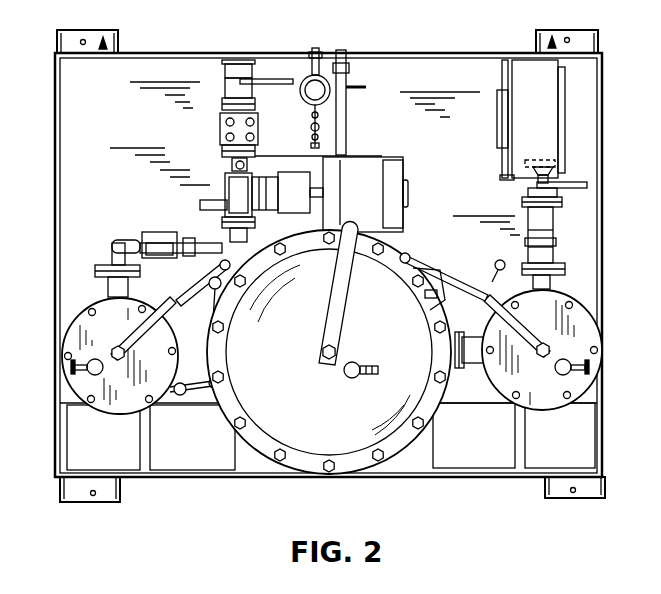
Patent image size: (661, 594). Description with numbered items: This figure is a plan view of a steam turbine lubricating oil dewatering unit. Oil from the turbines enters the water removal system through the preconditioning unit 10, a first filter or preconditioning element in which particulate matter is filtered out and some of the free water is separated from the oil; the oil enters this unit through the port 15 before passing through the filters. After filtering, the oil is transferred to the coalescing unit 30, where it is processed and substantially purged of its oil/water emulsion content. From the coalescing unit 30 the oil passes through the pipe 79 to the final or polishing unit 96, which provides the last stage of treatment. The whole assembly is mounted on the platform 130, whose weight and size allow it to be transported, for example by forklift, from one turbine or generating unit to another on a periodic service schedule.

The preconditioning unit 10 is at (64, 348).
The port 15 is at (125, 240).
The coalescing unit 30 is at (306, 445).
The pipe 79 is at (470, 364).
The polishing unit 96 is at (594, 331).
The platform 130 is at (538, 480).